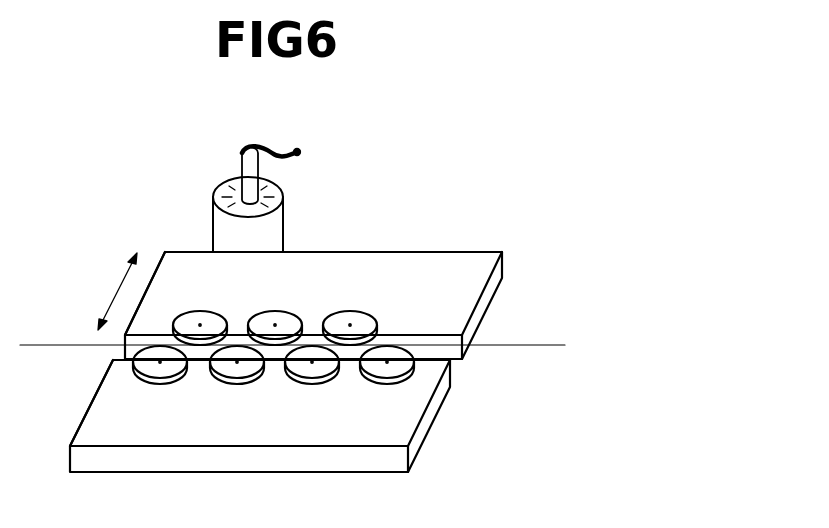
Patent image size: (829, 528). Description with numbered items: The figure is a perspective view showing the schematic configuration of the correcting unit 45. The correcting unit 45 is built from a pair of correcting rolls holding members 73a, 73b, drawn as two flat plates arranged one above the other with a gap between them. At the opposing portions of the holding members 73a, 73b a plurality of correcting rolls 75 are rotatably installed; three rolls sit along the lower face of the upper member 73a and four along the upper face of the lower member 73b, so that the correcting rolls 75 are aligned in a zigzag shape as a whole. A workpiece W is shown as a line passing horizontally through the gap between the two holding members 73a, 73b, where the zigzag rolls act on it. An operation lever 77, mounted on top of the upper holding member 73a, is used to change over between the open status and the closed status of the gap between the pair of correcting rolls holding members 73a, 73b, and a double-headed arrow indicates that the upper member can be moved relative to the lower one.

The correcting unit 45 is at (308, 290).
The correcting rolls holding member 73a is at (376, 252).
The correcting rolls holding member 73b is at (428, 415).
The correcting rolls 75 is at (306, 366).
The operation lever 77 is at (283, 145).
The workpiece W is at (517, 345).